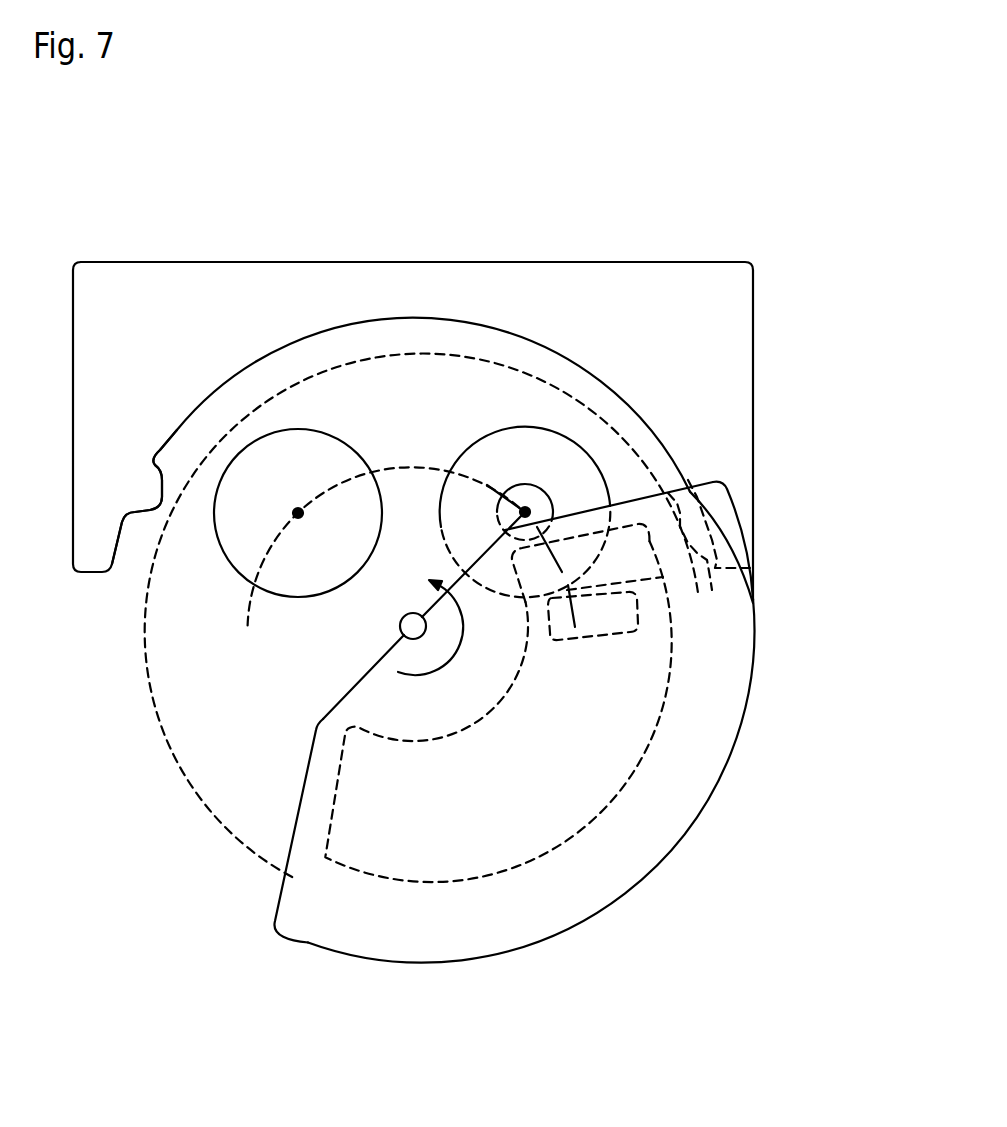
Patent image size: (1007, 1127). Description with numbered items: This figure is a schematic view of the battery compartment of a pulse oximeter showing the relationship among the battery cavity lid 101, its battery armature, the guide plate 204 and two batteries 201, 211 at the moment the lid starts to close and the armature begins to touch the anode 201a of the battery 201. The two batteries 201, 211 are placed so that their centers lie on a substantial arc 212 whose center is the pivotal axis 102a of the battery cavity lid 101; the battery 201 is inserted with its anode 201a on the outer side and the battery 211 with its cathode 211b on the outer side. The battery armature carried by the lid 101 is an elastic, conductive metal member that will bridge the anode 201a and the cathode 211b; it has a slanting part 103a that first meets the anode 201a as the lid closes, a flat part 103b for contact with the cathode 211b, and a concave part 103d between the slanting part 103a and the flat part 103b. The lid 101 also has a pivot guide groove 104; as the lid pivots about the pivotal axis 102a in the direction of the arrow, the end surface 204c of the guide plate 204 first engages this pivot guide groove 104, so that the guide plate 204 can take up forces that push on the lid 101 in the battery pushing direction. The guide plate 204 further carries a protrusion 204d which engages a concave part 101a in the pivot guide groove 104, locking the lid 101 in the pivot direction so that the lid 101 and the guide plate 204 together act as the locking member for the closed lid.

The battery cavity lid 101 is at (397, 695).
The concave part 101a is at (683, 533).
The pivotal axis 102a is at (400, 623).
The slanting part 103a is at (645, 562).
The flat part 103b is at (633, 700).
The concave part 103d is at (623, 618).
The pivot guide groove 104 is at (638, 858).
The battery 201 is at (523, 448).
The anode 201a is at (543, 502).
The guide plate 204 is at (725, 353).
The end surface 204c is at (727, 547).
The protrusion 204d is at (148, 493).
The battery 211 is at (353, 447).
The cathode 211b is at (292, 448).
The arc 212 is at (412, 467).